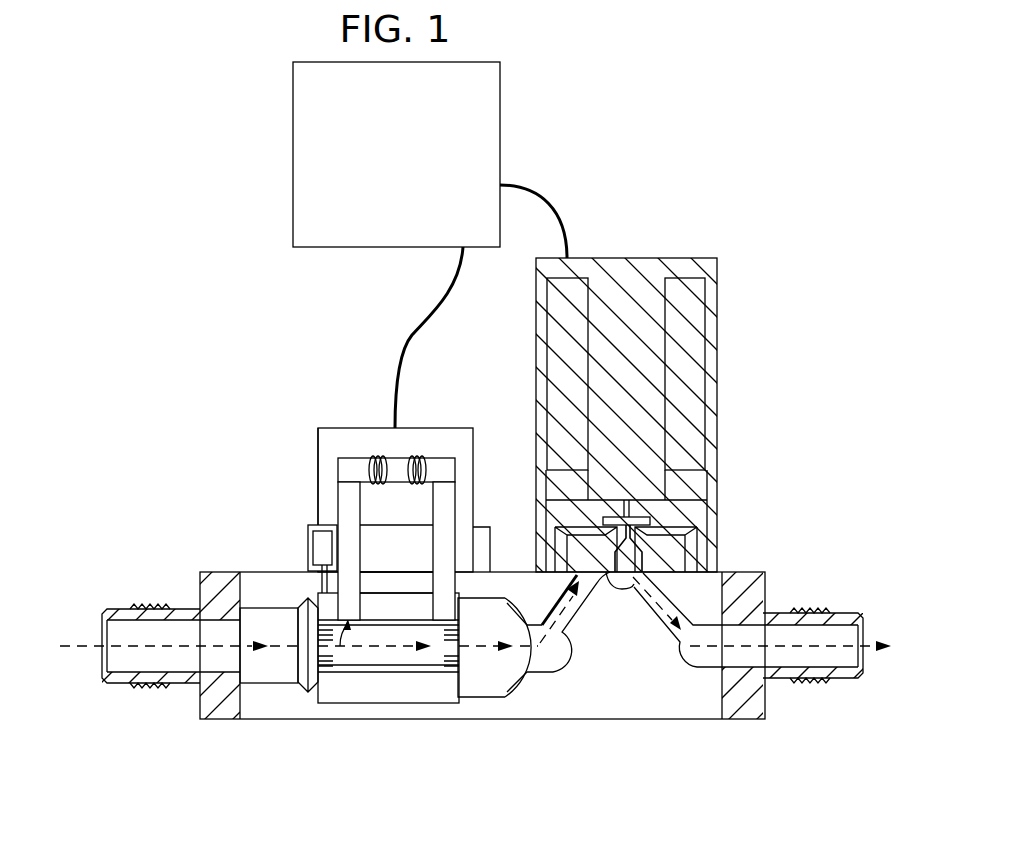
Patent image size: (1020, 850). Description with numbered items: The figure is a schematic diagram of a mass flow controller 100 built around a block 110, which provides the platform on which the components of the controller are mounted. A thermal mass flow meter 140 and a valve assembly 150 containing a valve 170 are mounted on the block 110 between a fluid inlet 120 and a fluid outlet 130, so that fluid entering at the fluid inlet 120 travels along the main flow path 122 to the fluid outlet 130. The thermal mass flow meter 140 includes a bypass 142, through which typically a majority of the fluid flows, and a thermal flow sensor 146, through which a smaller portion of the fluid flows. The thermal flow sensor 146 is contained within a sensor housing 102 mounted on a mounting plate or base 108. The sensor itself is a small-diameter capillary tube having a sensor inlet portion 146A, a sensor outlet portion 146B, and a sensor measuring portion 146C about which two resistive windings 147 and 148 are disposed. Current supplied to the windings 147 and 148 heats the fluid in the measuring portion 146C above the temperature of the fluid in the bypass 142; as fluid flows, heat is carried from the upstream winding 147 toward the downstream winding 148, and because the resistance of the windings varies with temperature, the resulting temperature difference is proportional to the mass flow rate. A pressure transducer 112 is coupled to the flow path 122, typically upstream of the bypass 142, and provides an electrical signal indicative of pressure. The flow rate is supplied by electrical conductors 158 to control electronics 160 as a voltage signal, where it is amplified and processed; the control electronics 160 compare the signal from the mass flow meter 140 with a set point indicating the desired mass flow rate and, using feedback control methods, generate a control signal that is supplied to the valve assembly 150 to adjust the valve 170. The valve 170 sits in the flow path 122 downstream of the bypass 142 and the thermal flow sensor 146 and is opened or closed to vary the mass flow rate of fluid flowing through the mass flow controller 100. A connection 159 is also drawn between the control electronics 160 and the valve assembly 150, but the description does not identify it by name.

The mass flow controller 100 is at (731, 131).
The sensor housing 102 is at (318, 503).
The mounting plate or base 108 is at (307, 550).
The block 110 is at (647, 710).
The pressure transducer 112 is at (322, 542).
The fluid inlet 120 is at (130, 684).
The flow path 122 is at (75, 652).
The fluid outlet 130 is at (843, 680).
The thermal mass flow meter 140 is at (355, 488).
The bypass 142 is at (388, 674).
The thermal flow sensor 146 is at (355, 488).
The sensor inlet portion 146A is at (343, 480).
The sensor outlet portion 146B is at (457, 502).
The sensor measuring portion 146C is at (355, 457).
The upstream resistive winding 147 is at (372, 456).
The downstream resistive winding 148 is at (419, 456).
The valve assembly 150 is at (657, 411).
The electrical conductors 158 is at (392, 358).
The valve control wire 159 is at (547, 204).
The control electronics 160 is at (396, 154).
The valve 170 is at (648, 517).